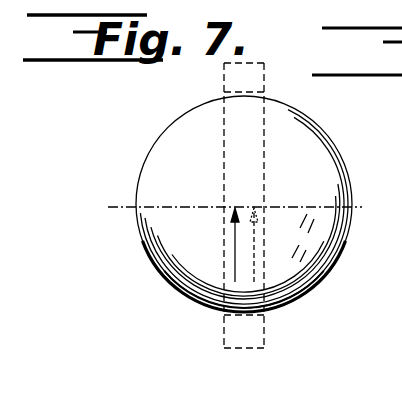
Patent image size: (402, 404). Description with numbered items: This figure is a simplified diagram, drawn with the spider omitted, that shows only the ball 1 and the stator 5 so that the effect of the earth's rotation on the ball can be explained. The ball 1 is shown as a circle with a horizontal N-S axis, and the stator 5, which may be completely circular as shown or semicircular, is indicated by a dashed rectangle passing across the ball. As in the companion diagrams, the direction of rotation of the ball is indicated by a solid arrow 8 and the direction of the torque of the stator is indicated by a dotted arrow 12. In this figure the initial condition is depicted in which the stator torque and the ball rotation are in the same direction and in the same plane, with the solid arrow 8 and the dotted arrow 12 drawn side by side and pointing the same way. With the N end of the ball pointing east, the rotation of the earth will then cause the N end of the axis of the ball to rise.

The magnet body 1 is at (237, 204).
The coil / winding region 5 is at (226, 78).
The solid arrow 8 is at (235, 243).
The dotted arrow 12 is at (255, 243).